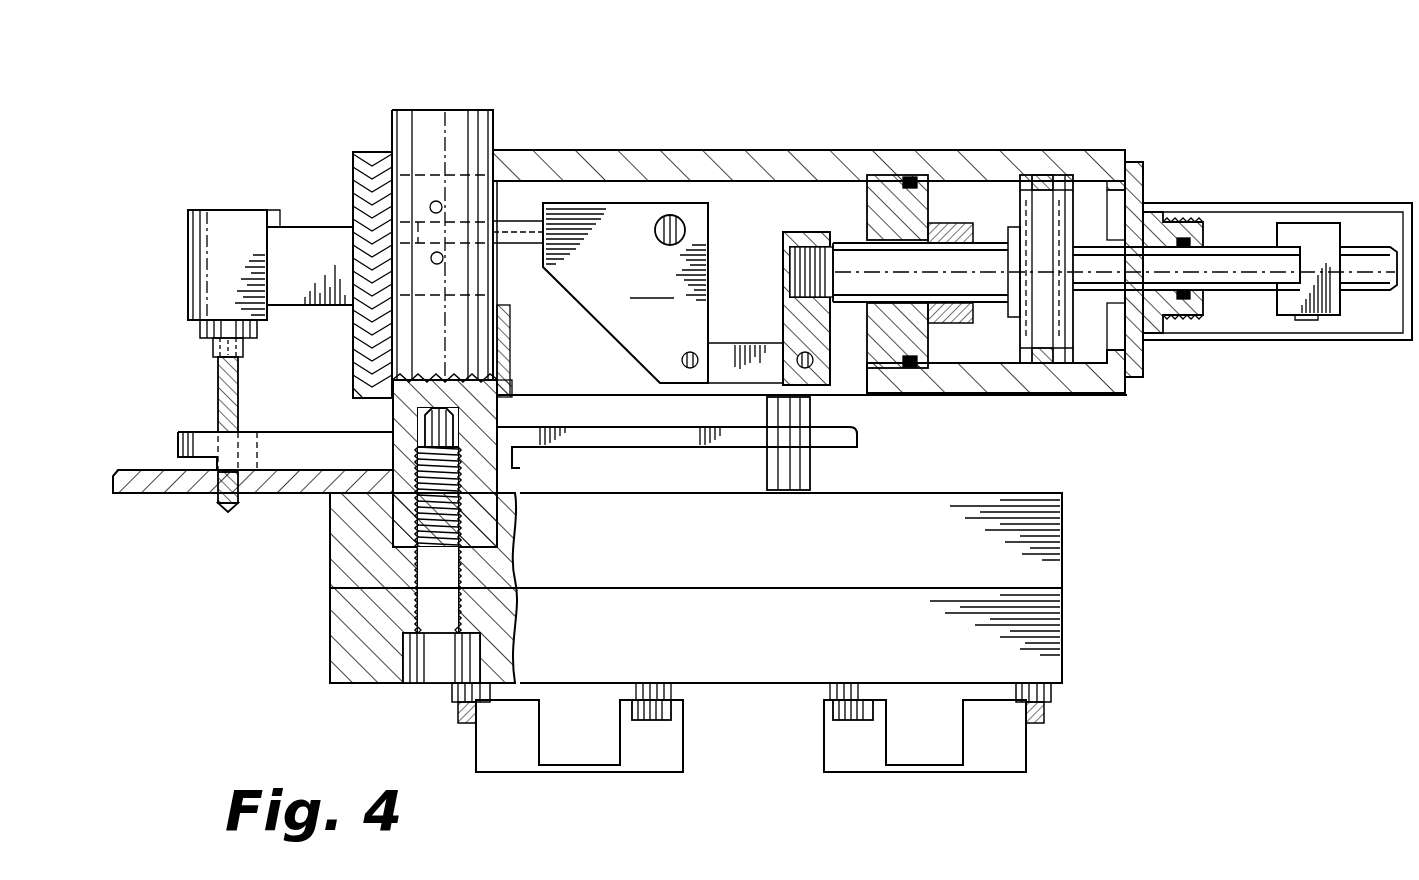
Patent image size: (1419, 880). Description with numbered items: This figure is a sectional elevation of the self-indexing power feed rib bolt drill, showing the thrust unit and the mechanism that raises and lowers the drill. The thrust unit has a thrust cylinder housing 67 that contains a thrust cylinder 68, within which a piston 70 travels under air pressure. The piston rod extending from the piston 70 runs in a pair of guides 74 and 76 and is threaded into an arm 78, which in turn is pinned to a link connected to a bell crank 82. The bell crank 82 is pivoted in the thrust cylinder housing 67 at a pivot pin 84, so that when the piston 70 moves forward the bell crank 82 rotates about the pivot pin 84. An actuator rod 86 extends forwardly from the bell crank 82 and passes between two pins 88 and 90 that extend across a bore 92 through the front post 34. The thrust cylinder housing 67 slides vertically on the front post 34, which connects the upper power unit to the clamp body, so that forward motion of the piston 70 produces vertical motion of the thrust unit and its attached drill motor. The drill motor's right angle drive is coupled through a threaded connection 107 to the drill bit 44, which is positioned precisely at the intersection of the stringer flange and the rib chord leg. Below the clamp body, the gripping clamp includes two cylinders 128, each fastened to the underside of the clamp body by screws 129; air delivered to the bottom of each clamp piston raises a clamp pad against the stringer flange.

The front post 34 is at (437, 108).
The bore 92 is at (419, 158).
The pin 88 is at (441, 203).
The thrust cylinder housing 67 is at (650, 148).
The pivot pin 84 is at (686, 228).
The bell crank 82 is at (625, 293).
The actuator rod 86 is at (507, 247).
The pin 90 is at (438, 264).
The arm 78 is at (786, 318).
The guide 74 is at (887, 365).
The piston 70 is at (1036, 357).
The thrust cylinder 68 is at (1083, 353).
The guide 76 is at (1148, 300).
The threaded connection 107 is at (211, 350).
The drill bit 44 is at (218, 397).
The cylinder 128 is at (573, 772).
The screw 129 is at (652, 720).